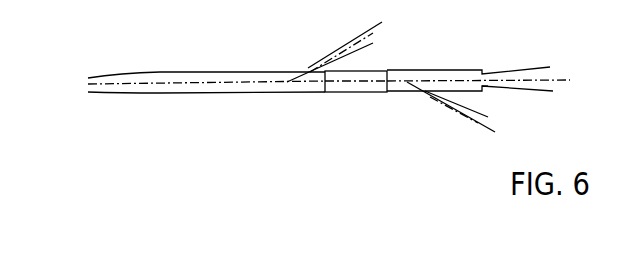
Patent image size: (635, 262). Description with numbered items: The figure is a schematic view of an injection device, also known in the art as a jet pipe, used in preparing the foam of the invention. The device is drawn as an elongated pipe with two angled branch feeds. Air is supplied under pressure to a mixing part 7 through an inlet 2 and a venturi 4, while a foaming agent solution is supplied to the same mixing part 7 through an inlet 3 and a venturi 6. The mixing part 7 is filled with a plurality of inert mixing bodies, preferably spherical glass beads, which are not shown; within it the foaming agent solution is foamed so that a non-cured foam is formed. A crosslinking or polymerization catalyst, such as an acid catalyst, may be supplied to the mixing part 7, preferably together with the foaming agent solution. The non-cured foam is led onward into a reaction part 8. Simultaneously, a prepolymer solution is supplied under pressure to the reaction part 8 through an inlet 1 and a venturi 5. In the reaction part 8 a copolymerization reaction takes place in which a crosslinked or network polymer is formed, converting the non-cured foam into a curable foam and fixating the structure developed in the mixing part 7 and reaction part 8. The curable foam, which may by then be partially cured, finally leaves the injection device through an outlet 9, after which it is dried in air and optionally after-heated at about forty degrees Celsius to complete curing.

The inlet 1 is at (346, 43).
The inlet 2 is at (552, 73).
The inlet 3 is at (468, 118).
The venturi 4 is at (488, 85).
The venturi 5 is at (307, 67).
The venturi 6 is at (427, 95).
The mixing part 7 is at (373, 80).
The reaction part 8 is at (227, 92).
The outlet 9 is at (90, 85).